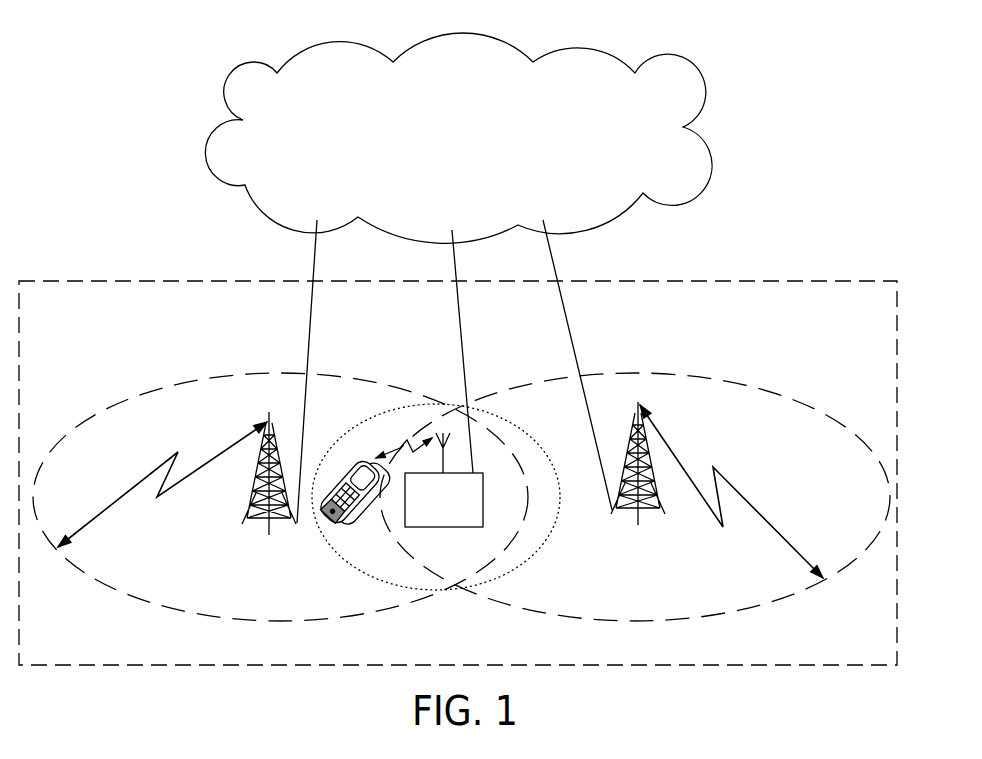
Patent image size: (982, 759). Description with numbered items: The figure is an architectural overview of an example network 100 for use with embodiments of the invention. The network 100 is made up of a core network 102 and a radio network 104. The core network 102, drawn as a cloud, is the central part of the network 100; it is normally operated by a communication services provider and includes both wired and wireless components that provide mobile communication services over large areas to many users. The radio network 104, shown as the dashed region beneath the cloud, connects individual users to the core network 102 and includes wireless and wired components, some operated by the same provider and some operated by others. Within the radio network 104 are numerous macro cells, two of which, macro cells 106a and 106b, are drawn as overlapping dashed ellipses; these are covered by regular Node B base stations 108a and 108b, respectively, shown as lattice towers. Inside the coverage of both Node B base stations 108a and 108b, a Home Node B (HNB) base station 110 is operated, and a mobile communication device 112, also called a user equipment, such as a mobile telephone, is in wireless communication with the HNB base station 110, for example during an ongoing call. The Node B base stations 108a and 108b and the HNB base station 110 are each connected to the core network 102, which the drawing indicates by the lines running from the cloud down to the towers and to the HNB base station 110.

The network 100 is at (187, 80).
The core network 102 is at (237, 184).
The radio network 104 is at (187, 297).
The macro cell 106a is at (235, 588).
The macro cell 106b is at (745, 587).
The Node B base station 108a is at (250, 495).
The Node B base station 108b is at (638, 503).
The Home Node B (HNB) base station 110 is at (467, 517).
The mobile communication device 112 is at (343, 528).